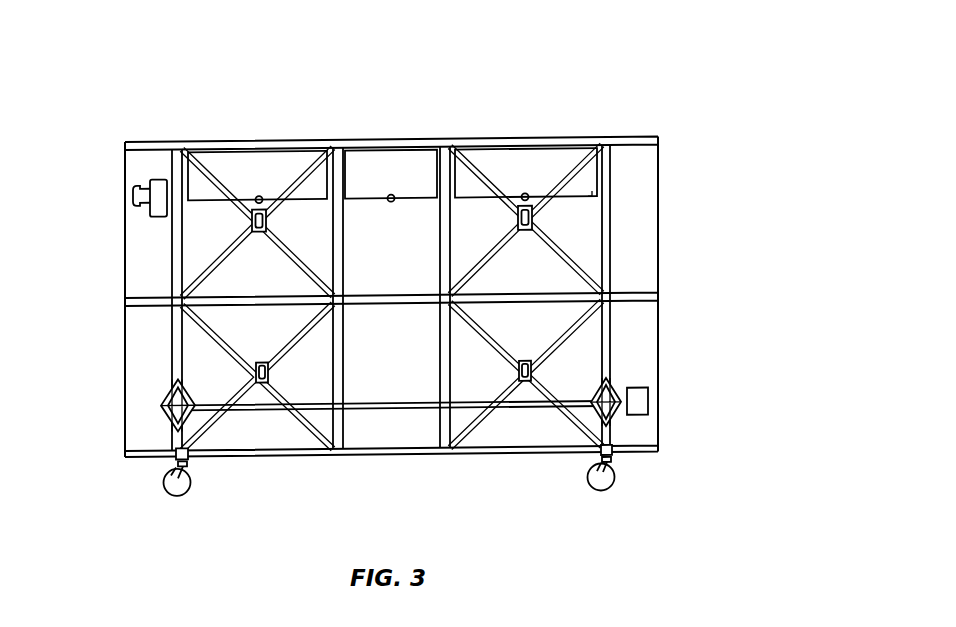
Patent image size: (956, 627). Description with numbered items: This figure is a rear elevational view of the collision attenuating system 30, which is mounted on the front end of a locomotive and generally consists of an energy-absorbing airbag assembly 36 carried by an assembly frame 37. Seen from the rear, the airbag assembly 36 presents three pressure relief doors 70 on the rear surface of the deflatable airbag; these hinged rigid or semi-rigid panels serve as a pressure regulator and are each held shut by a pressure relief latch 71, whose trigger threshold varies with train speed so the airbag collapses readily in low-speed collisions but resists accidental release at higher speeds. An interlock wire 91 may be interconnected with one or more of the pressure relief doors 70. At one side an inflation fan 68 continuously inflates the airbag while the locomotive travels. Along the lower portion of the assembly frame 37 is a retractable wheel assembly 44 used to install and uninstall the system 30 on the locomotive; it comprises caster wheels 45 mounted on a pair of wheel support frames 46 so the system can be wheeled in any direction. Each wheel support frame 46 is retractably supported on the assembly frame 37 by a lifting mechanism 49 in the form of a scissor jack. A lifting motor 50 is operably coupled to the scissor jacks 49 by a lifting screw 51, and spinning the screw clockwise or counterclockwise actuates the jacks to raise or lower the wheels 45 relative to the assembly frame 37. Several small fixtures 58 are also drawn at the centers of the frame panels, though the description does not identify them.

The collision attenuating system 30 is at (673, 125).
The energy-absorbing airbag assembly 36 is at (661, 177).
The assembly frame 37 is at (170, 334).
The retractable wheel assembly 44 is at (158, 475).
The wheels 45 is at (180, 497).
The wheel support frames 46 is at (189, 462).
The lifting mechanism 49 is at (189, 391).
The lifting motor 50 is at (641, 409).
The lifting screw 51 is at (366, 413).
The light fixture 58 is at (268, 222).
The inflation fan 68 is at (163, 190).
The pressure relief doors 70 is at (252, 172).
The pressure relief latches 71 is at (262, 200).
The interlock wire 91 is at (592, 207).